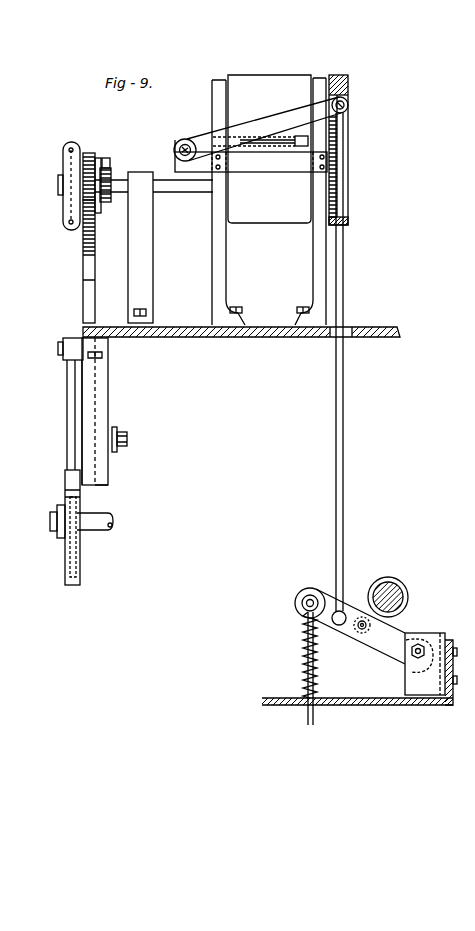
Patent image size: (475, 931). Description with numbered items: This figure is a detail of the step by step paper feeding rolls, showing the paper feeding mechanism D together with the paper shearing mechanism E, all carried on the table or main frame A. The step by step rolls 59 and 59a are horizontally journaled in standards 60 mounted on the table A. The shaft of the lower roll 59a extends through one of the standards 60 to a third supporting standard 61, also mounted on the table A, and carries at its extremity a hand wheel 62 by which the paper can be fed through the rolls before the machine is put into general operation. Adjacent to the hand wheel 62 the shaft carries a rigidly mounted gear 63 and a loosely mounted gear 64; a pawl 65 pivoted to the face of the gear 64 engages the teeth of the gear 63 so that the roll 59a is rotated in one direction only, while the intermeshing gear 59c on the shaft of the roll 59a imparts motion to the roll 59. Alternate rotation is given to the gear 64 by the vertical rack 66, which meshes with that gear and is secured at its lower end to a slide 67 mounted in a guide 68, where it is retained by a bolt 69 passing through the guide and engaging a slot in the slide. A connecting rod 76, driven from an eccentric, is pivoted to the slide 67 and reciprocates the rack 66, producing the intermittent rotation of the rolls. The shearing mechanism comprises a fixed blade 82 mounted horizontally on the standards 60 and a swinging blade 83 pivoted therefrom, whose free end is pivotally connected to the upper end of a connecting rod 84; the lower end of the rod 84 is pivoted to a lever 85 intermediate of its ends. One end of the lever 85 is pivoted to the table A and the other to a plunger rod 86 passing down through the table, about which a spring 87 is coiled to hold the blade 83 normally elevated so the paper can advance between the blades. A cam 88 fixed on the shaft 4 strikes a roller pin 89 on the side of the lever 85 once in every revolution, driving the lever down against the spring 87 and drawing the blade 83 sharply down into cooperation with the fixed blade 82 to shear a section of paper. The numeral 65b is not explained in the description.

The paper feeding mechanism D is at (67, 111).
The paper shearing mechanism E is at (256, 131).
The table or main frame A is at (173, 338).
The shaft 4 is at (403, 585).
The step by step roll 59 is at (269, 149).
The lower step by step roll 59a is at (269, 185).
The intermeshing gear 59c is at (348, 217).
The standards 60 is at (227, 268).
The third supporting standard 61 is at (153, 248).
The hand wheel 62 is at (78, 148).
The rigidly mounted gear 63 is at (112, 173).
The loosely mounted gear 64 is at (97, 157).
The pawl 65 is at (107, 160).
The rack head 65b is at (350, 83).
The vertical rack 66 is at (95, 253).
The slide 67 is at (87, 400).
The guide 68 is at (110, 421).
The bolt 69 is at (127, 440).
The connecting rod 76 is at (68, 438).
The fixed blade 82 is at (251, 154).
The swinging blade 83 is at (261, 129).
The connecting rod 84 is at (348, 151).
The lever 85 is at (350, 626).
The plunger rod 86 is at (315, 662).
The spring 87 is at (315, 668).
The cam 88 is at (357, 590).
The roller pin 89 is at (373, 618).